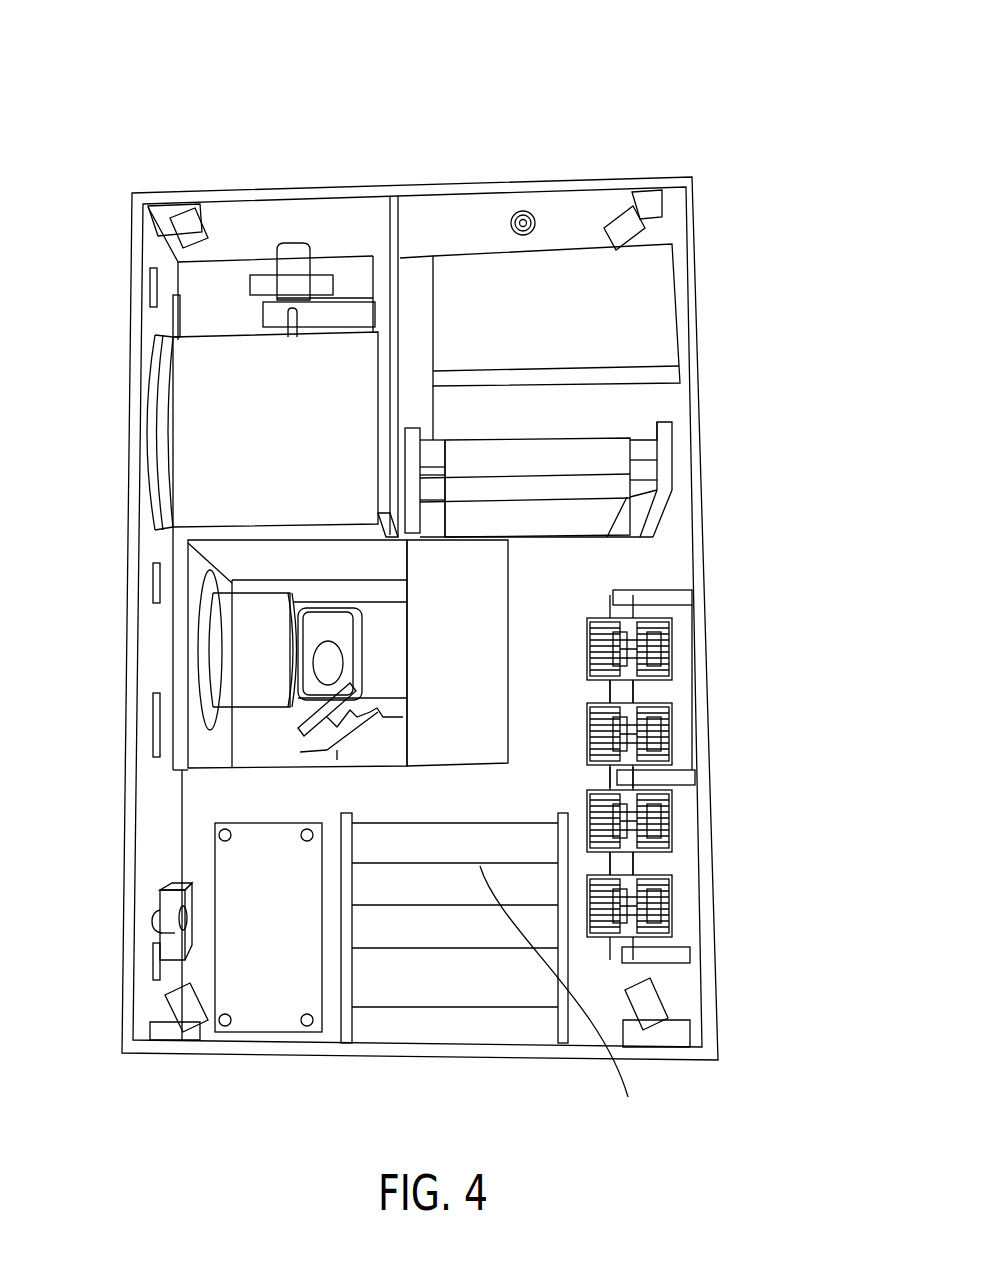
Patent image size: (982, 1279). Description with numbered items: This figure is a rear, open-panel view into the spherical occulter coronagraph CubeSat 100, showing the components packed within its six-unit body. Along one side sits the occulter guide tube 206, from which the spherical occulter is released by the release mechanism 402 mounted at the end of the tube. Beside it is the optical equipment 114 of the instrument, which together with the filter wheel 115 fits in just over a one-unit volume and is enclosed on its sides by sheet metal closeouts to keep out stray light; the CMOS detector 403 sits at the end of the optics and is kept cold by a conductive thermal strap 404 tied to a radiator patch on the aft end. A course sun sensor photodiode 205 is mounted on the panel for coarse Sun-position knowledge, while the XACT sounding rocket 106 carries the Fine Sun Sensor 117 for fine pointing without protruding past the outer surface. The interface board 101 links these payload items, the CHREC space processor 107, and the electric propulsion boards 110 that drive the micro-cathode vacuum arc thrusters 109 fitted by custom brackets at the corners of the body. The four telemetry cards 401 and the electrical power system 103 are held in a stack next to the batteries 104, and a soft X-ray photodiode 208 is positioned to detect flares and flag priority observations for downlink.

The spherical occulter coronagraph CubeSat 100 is at (200, 78).
The spacecraft and payload interface board 101 is at (585, 492).
The electrical power system (EPS) 103 is at (432, 1010).
The batteries 104 is at (263, 1002).
The XACT sounding rocket 106 is at (645, 308).
The CHREC space processor (CSP) 107 is at (585, 455).
The micro-cathode vacuum arc thrusters 109 is at (653, 203).
The electric propulsion boards 110 is at (665, 898).
The optical equipment (optics package) 114 is at (235, 674).
The filter wheel 115 is at (357, 748).
The Fine Sun Sensor (FSS) 117 is at (152, 968).
The course sun sensor (CSS) photodiode 205 is at (518, 208).
The occulter guide tube 206 is at (190, 445).
The soft X-ray photodiode 208 is at (145, 915).
The telemetry cards 401 is at (561, 995).
The release mechanism 402 is at (293, 272).
The CMOS detector 403 is at (492, 580).
The thermal strap 404 is at (520, 605).